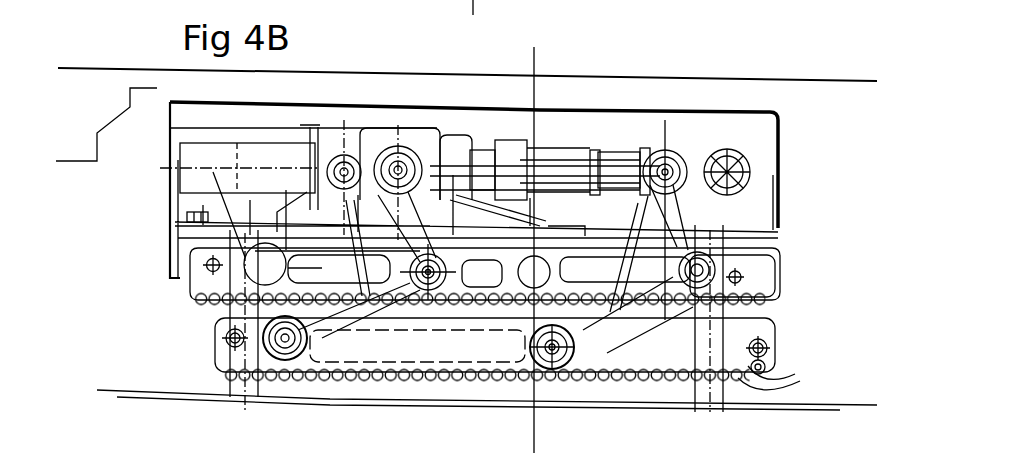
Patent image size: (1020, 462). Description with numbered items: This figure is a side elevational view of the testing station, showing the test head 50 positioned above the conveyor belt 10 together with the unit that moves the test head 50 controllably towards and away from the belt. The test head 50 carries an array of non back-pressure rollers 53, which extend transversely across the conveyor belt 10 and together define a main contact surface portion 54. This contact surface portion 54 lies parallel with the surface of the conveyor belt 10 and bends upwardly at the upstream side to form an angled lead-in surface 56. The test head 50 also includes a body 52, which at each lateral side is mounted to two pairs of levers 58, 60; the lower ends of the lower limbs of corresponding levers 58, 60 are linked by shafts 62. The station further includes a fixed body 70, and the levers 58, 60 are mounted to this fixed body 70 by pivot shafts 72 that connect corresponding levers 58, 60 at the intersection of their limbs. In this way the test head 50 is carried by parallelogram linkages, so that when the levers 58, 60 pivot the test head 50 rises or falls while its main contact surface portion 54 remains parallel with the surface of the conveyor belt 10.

The conveyor belt 10 is at (847, 404).
The test head 50 is at (786, 337).
The body 52 is at (738, 338).
The non back-pressure rollers 53 is at (787, 382).
The main contact surface portion 54 is at (500, 388).
The angled lead-in surface 56 is at (755, 404).
The lever 58 is at (332, 327).
The lever 60 is at (617, 337).
The shafts 62 is at (283, 357).
The fixed body 70 is at (783, 150).
The pivot shafts 72 is at (450, 273).